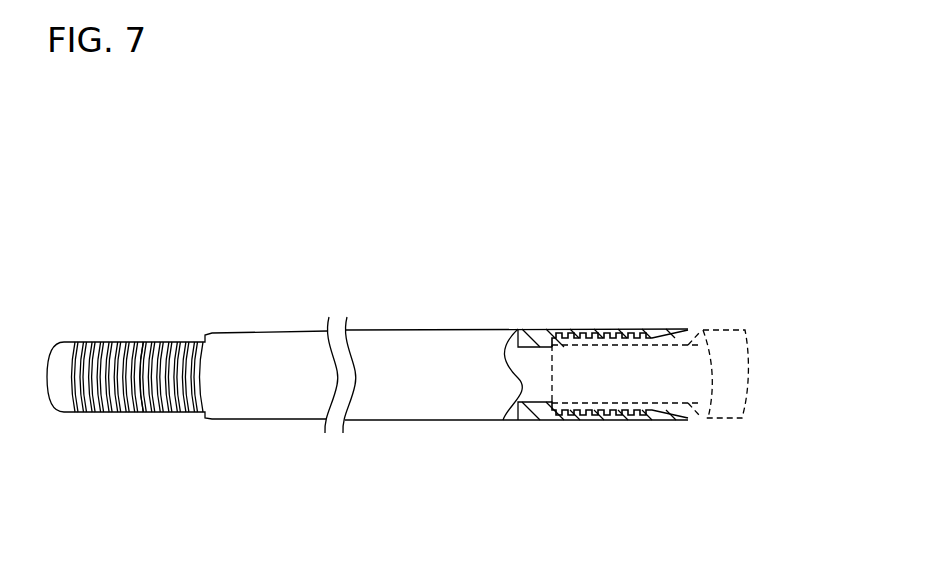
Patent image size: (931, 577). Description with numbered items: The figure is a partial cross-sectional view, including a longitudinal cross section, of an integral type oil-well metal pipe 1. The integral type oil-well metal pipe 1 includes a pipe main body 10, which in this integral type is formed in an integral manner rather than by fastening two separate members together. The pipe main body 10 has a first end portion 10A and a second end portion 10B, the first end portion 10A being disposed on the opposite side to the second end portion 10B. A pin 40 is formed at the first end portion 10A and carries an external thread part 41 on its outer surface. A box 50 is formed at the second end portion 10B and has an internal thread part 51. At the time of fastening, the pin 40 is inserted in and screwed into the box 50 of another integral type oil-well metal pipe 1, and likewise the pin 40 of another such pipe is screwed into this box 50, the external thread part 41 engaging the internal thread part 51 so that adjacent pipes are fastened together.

The integral type oil-well metal pipe 1 is at (700, 330).
The pipe main body 10 is at (685, 217).
The first end portion 10A is at (136, 322).
The second end portion 10B is at (628, 297).
The pin 40 is at (112, 421).
The external thread part 41 is at (148, 415).
The box 50 is at (612, 433).
The internal thread part 51 is at (627, 410).